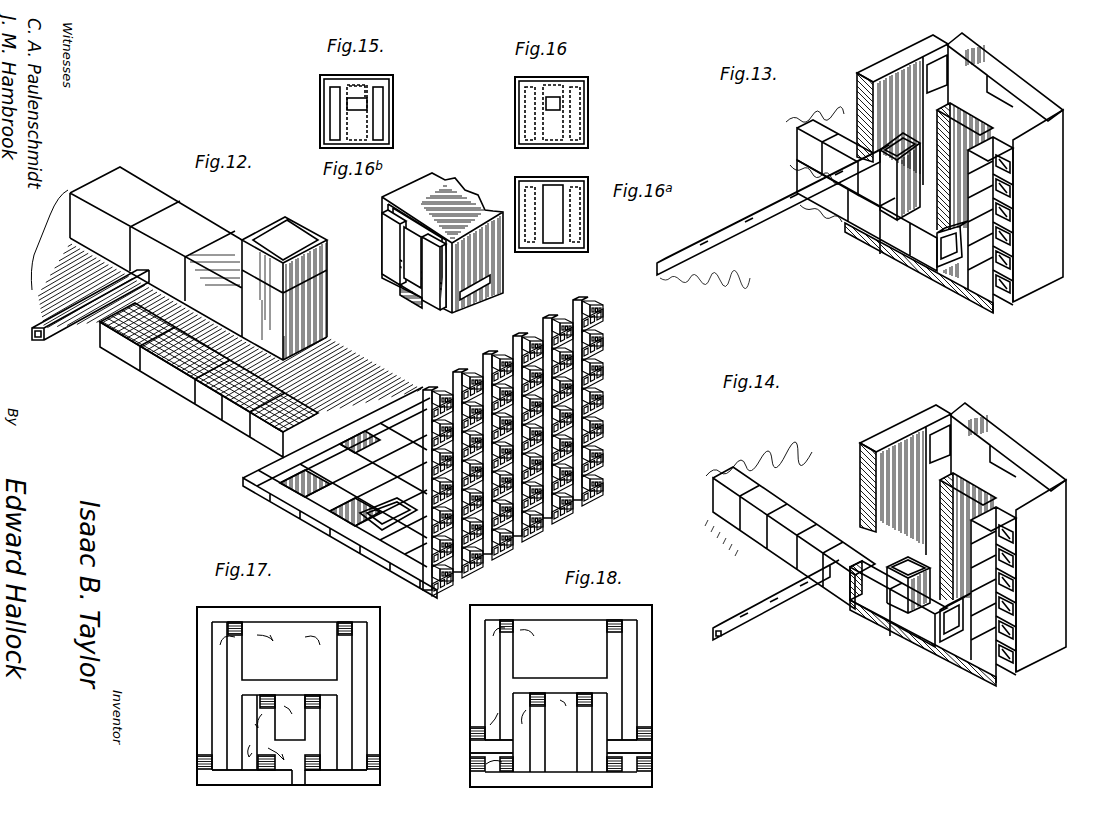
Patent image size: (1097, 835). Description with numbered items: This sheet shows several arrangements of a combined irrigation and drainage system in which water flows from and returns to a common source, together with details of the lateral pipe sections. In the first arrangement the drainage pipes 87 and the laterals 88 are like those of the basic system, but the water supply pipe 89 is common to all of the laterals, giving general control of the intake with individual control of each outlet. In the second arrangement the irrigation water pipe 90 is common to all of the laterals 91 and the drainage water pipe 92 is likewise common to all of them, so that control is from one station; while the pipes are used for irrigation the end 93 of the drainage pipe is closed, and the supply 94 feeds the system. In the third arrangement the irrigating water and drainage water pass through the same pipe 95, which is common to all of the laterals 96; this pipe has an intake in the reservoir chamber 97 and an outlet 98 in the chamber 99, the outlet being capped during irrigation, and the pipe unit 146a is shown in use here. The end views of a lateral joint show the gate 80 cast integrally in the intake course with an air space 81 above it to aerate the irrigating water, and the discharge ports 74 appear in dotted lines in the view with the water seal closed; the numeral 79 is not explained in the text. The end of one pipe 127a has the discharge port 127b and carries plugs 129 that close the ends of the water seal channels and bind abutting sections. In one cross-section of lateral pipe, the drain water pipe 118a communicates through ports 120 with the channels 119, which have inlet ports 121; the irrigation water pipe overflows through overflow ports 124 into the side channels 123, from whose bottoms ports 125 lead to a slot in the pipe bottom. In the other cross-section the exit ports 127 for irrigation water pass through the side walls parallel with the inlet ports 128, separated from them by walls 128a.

In FIG. 16, the discharge ports 74 is at (515, 136).
In FIG. 15, the flue plug 79 is at (352, 118).
In FIG. 15, the gate 80 is at (348, 103).
In FIG. 15, the air space 81 is at (353, 92).
In FIG. 12, the drainage pipes 87 is at (163, 362).
In FIG. 12, the laterals 88 is at (58, 352).
In FIG. 12, the water supply pipe 89 is at (155, 198).
In FIG. 13, the irrigation water pipe 90 is at (823, 128).
In FIG. 13, the laterals 91 is at (767, 217).
In FIG. 13, the drainage water pipe 92 is at (868, 222).
In FIG. 13, the end of drainage pipe 93 is at (940, 268).
In FIG. 13, the supply 94 is at (962, 43).
In FIG. 14, the pipe 95 is at (837, 537).
In FIG. 14, the laterals 96 is at (760, 616).
In FIG. 14, the reservoir chamber 97 is at (900, 452).
In FIG. 14, the outlet 98 is at (936, 656).
In FIG. 14, the chamber 99 is at (997, 477).
In FIG. 14, the pipe unit 146a is at (837, 598).
In FIG. 17, the drain water pipe 118a is at (289, 651).
In FIG. 17, the channels 119 is at (220, 670).
In FIG. 17, the ports 120 is at (233, 622).
In FIG. 17, the inlet ports 121 is at (212, 756).
In FIG. 17, the channels 123 is at (250, 740).
In FIG. 17, the overflow ports 124 is at (262, 703).
In FIG. 17, the ports 125 is at (320, 763).
In FIG. 18, the exit ports 127 is at (462, 762).
In FIG. 16B, the pipe 127a is at (497, 265).
In FIG. 16B, the discharge port 127b is at (497, 304).
In FIG. 18, the inlet ports 128 is at (475, 730).
In FIG. 18, the walls 128a is at (640, 750).
In FIG. 16B, the plugs 129 is at (431, 301).